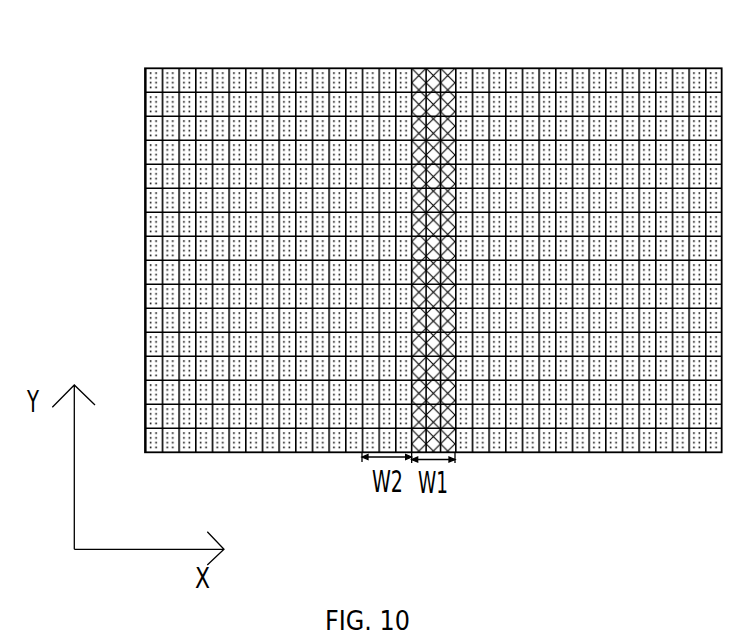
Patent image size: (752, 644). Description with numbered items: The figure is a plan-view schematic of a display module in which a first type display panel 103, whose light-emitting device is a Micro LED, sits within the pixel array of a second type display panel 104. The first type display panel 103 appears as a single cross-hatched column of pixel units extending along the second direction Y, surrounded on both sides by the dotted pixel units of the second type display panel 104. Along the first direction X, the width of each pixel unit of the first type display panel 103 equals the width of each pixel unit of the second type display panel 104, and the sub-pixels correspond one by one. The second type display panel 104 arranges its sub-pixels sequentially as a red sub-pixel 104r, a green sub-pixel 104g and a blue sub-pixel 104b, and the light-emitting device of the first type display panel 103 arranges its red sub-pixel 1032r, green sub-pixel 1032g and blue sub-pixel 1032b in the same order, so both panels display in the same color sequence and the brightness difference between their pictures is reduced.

The second type display panel 104 is at (433, 261).
The red sub-pixel 104r is at (373, 78).
The green sub-pixel 104g is at (392, 75).
The blue sub-pixel 104b is at (403, 82).
The first type display panel 103 is at (490, 260).
The red sub-pixel 1032r is at (430, 78).
The green sub-pixel 1032g is at (449, 74).
The blue sub-pixel 1032b is at (455, 74).